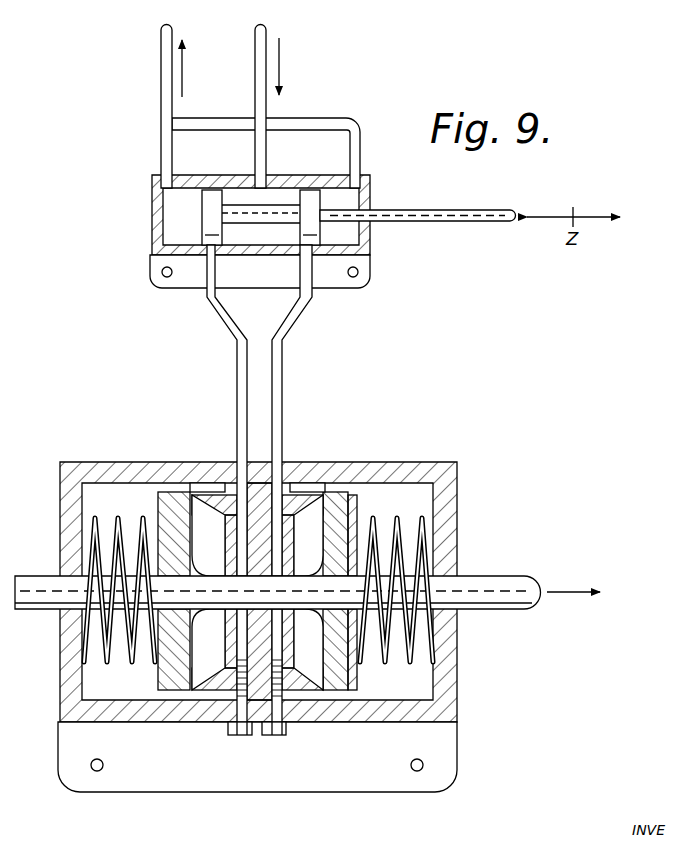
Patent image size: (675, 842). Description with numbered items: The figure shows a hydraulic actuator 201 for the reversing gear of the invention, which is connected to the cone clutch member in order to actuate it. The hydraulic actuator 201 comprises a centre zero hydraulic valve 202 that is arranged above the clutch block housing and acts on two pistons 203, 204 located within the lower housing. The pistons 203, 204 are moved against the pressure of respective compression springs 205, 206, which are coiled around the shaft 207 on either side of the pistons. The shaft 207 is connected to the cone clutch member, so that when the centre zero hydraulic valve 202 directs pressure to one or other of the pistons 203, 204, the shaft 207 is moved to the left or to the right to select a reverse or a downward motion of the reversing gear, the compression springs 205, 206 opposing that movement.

The hydraulic actuator 201 is at (148, 283).
The centre zero hydraulic valve 202 is at (314, 118).
The piston 203 is at (179, 489).
The piston 204 is at (334, 488).
The compression spring 205 is at (92, 650).
The compression spring 206 is at (426, 523).
The shaft 207 is at (507, 580).